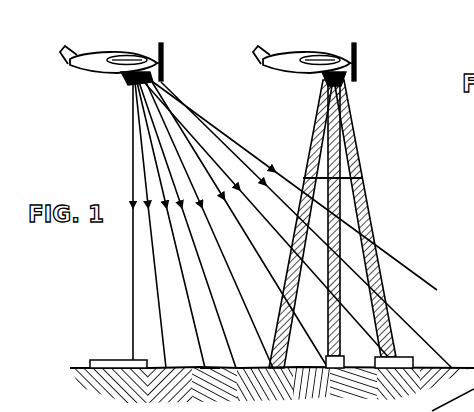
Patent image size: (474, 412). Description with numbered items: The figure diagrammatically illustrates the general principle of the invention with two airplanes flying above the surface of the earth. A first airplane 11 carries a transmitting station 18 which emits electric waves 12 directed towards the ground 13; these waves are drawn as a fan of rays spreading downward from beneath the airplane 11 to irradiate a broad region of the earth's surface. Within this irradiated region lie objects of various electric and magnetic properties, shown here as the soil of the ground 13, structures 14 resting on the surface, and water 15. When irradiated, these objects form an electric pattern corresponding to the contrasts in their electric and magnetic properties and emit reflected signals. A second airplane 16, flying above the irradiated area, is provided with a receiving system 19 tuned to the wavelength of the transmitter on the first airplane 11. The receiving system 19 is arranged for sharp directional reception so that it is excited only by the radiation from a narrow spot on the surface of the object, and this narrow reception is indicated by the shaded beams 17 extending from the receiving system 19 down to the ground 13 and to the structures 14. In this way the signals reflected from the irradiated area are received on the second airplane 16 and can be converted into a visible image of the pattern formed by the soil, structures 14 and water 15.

The airplane 11 is at (108, 51).
The electric waves 12 is at (186, 123).
The ground 13 is at (246, 367).
The structures 14 is at (100, 360).
The water 15 is at (211, 367).
The second airplane 16 is at (307, 53).
The shaded beams 17 is at (343, 132).
The transmitting station 18 is at (127, 80).
The receiving system 19 is at (323, 78).